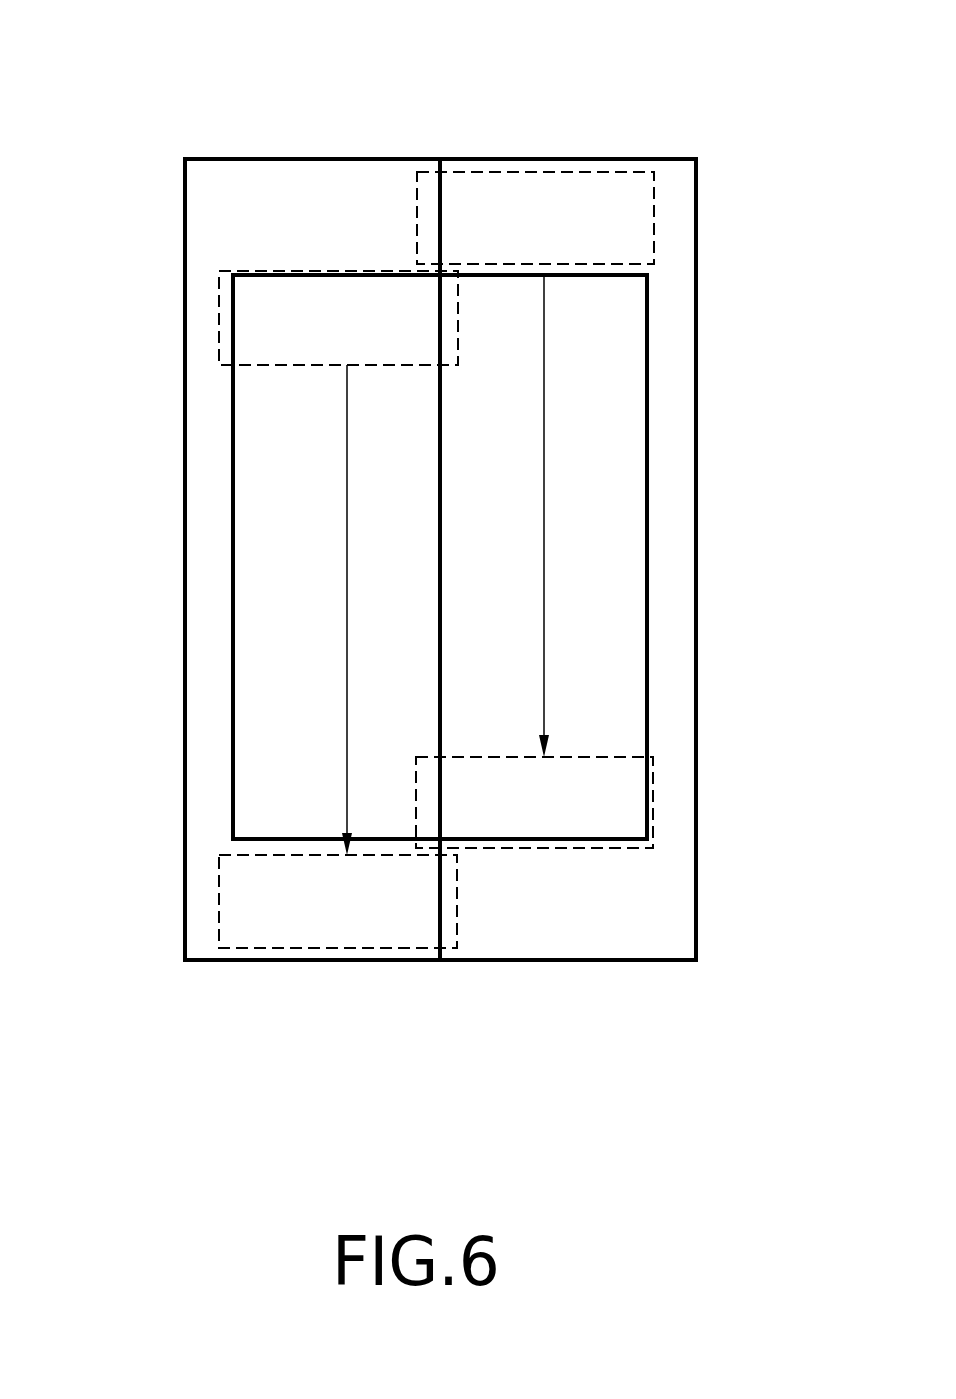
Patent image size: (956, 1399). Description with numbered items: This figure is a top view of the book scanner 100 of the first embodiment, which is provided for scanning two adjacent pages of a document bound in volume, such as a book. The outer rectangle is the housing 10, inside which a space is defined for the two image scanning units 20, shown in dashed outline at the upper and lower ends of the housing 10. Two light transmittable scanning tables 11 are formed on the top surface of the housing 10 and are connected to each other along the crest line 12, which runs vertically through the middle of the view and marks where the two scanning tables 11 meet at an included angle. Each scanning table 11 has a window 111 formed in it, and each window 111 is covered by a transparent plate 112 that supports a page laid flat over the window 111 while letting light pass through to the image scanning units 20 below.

The book scanner 100 is at (144, 31).
The housing 10 is at (692, 887).
The scanning table 11 is at (663, 530).
The window 111 is at (648, 442).
The transparent plate 112 is at (616, 352).
The crest line 12 is at (443, 183).
The image scanning unit 20 is at (643, 222).